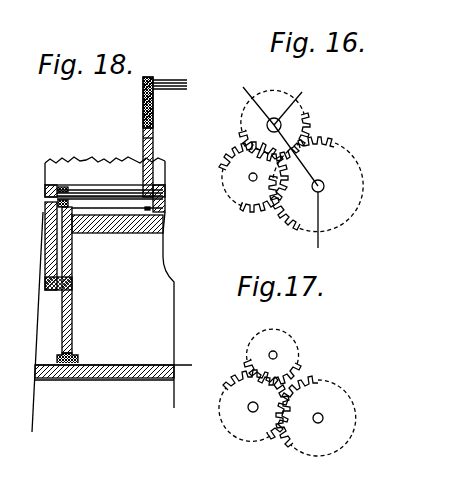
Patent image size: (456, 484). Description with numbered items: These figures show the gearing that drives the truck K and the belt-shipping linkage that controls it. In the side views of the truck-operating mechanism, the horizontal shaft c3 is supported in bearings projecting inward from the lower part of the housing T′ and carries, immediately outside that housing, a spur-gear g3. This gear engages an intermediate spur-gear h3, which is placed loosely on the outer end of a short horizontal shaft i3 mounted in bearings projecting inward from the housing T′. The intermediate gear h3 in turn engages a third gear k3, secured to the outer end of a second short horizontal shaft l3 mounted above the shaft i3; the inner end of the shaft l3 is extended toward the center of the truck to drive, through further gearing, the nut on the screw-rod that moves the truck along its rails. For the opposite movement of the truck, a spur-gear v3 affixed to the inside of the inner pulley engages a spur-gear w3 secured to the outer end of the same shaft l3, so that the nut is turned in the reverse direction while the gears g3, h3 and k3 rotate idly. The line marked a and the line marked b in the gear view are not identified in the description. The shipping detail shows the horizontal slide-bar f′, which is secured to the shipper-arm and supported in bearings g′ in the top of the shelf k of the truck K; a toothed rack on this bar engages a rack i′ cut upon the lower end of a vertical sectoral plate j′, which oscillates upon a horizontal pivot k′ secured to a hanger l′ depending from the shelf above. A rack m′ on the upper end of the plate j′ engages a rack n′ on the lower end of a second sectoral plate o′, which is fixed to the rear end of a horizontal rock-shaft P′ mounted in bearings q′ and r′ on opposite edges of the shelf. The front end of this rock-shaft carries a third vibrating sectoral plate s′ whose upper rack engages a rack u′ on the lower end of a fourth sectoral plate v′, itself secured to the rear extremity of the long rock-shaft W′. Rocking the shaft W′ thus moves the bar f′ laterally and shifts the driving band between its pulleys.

In FIG. 16, the lever a is at (274, 129).
In FIG. 16, the arm b is at (318, 228).
In FIG. 16, the horizontal shaft c3 is at (324, 186).
In FIG. 17, the horizontal shaft c3 is at (323, 418).
In FIG. 16, the second short horizontal shaft l3 is at (293, 102).
In FIG. 17, the second short horizontal shaft l3 is at (273, 355).
In FIG. 16, the spur-gear w3 is at (274, 125).
In FIG. 16, the spur-gear v3 is at (316, 184).
In FIG. 16, the short horizontal shaft i3 is at (249, 177).
In FIG. 17, the short horizontal shaft i3 is at (248, 407).
In FIG. 16, the intermediate spur-gear h3 is at (253, 177).
In FIG. 17, the intermediate spur-gear h3 is at (254, 405).
In FIG. 17, the third gear k3 is at (272, 357).
In FIG. 17, the spur-gear g3 is at (316, 416).
In FIG. 18, the rock-shaft W′ is at (170, 77).
In FIG. 18, the fourth vibrating sectoral plate v′ is at (155, 137).
In FIG. 18, the toothed rack u′ is at (153, 130).
In FIG. 18, the hanger l′ is at (153, 140).
In FIG. 18, the rock-shaft P′ is at (105, 180).
In FIG. 18, the third vibrating sectoral plate s′ is at (101, 180).
In FIG. 18, the bearing r′ is at (163, 209).
In FIG. 18, the bearing q′ is at (44, 211).
In FIG. 18, the second sectoral plate o′ is at (117, 218).
In FIG. 18, the toothed rack n′ is at (70, 245).
In FIG. 18, the toothed rack m′ is at (72, 252).
In FIG. 18, the horizontal pivot k′ is at (72, 280).
In FIG. 18, the vertical sectoral plate j′ is at (70, 276).
In FIG. 18, the housing T′ is at (146, 310).
In FIG. 18, the toothed rack i′ is at (72, 353).
In FIG. 18, the horizontal slide-bar f′ is at (61, 351).
In FIG. 18, the bearings g′ is at (78, 362).
In FIG. 18, the shelf k is at (113, 365).
In FIG. 18, the truck K is at (15, 330).